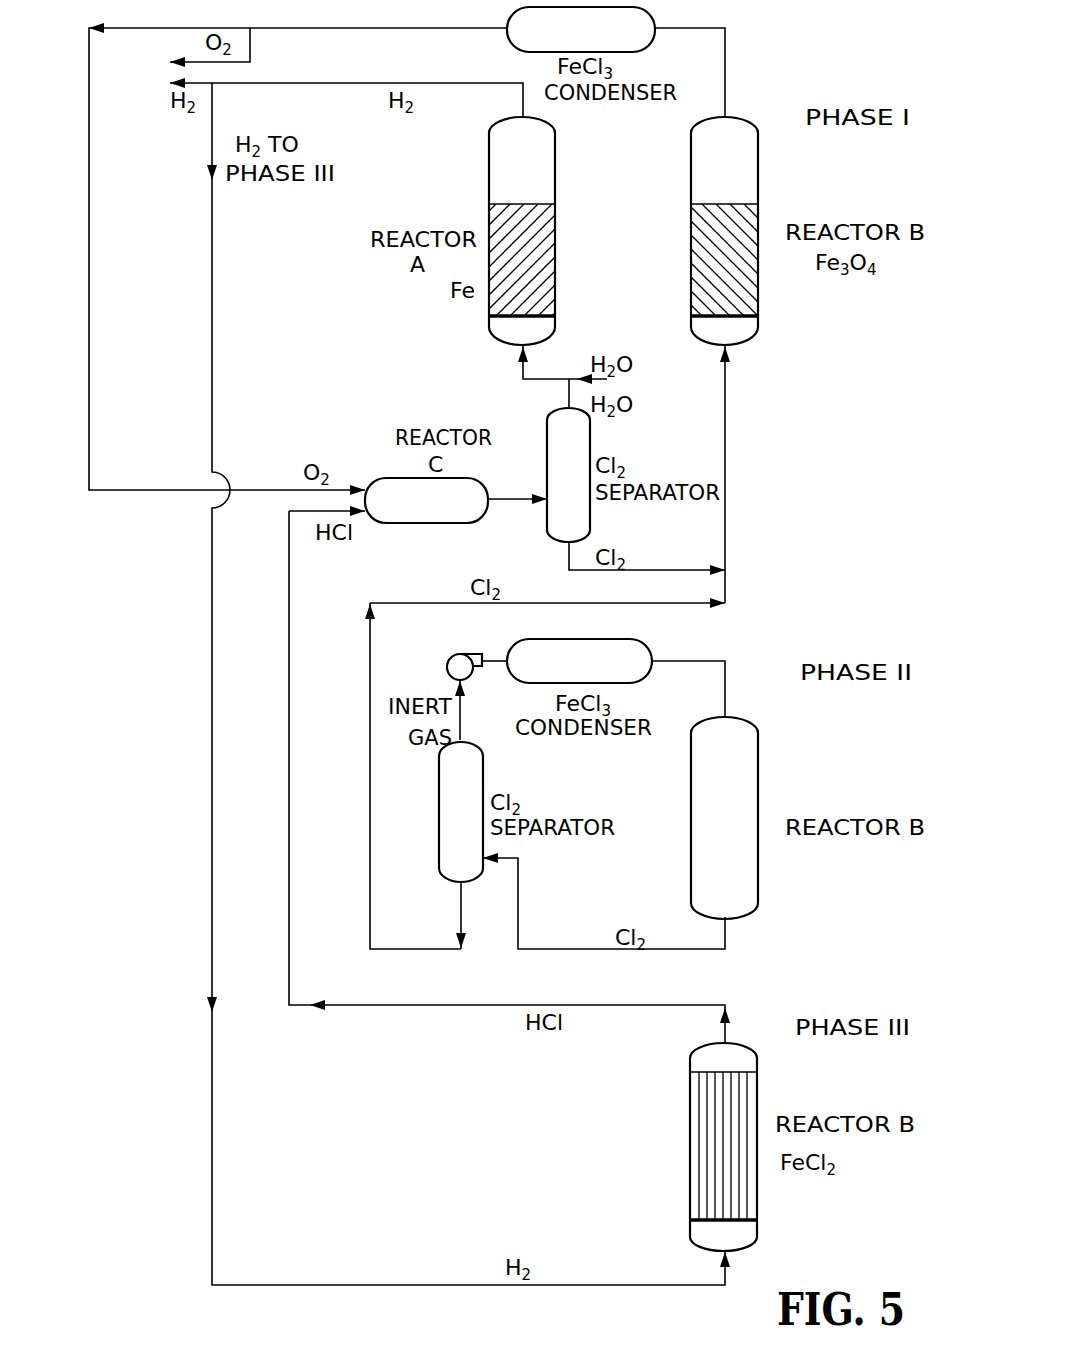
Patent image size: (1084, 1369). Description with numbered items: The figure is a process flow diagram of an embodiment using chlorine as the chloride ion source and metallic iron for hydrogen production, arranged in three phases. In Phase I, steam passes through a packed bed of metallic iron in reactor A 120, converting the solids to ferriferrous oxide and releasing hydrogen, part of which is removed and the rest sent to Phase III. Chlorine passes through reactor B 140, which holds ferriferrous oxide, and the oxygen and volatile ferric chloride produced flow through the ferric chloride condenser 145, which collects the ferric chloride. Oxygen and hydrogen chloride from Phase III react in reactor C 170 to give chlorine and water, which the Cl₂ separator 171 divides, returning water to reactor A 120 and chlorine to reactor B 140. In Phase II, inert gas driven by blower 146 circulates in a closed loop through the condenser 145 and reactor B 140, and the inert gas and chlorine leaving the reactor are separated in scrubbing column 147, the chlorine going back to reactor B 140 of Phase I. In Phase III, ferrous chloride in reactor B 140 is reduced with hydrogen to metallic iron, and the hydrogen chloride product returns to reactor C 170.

The condenser 145 is at (647, 12).
The reactor A 120 is at (556, 324).
The reactor B 140 is at (759, 327).
The reactor C 170 is at (415, 525).
The Cl₂ separator 171 is at (590, 527).
The blower 146 is at (455, 654).
The scrubbing column 147 is at (484, 770).